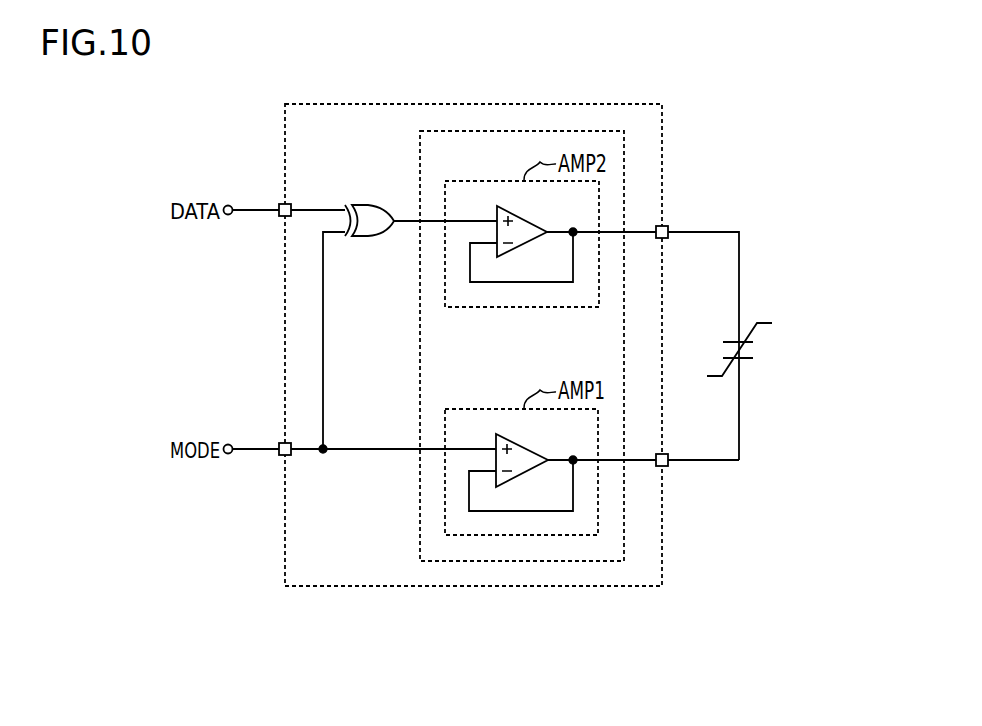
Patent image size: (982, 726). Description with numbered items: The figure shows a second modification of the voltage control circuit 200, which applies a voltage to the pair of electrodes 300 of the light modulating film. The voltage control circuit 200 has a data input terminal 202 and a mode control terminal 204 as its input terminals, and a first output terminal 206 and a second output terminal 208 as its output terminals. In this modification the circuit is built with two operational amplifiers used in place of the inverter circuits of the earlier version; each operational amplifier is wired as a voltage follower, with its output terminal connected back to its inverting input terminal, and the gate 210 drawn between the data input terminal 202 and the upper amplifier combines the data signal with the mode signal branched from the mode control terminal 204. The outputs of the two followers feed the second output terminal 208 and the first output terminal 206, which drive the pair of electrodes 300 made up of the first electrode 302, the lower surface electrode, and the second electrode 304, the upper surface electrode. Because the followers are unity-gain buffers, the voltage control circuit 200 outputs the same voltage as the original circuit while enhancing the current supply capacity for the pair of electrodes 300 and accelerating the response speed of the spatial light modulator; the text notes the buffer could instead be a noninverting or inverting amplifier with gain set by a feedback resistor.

The voltage control circuit 200 is at (474, 588).
The data input terminal 202 is at (280, 217).
The mode control terminal 204 is at (280, 456).
The first output terminal 206 is at (669, 467).
The second output terminal 208 is at (669, 225).
The exclusive OR gate 210 is at (376, 238).
The pair of electrodes 300 is at (802, 357).
The first electrode 302 is at (760, 357).
The second electrode 304 is at (760, 341).